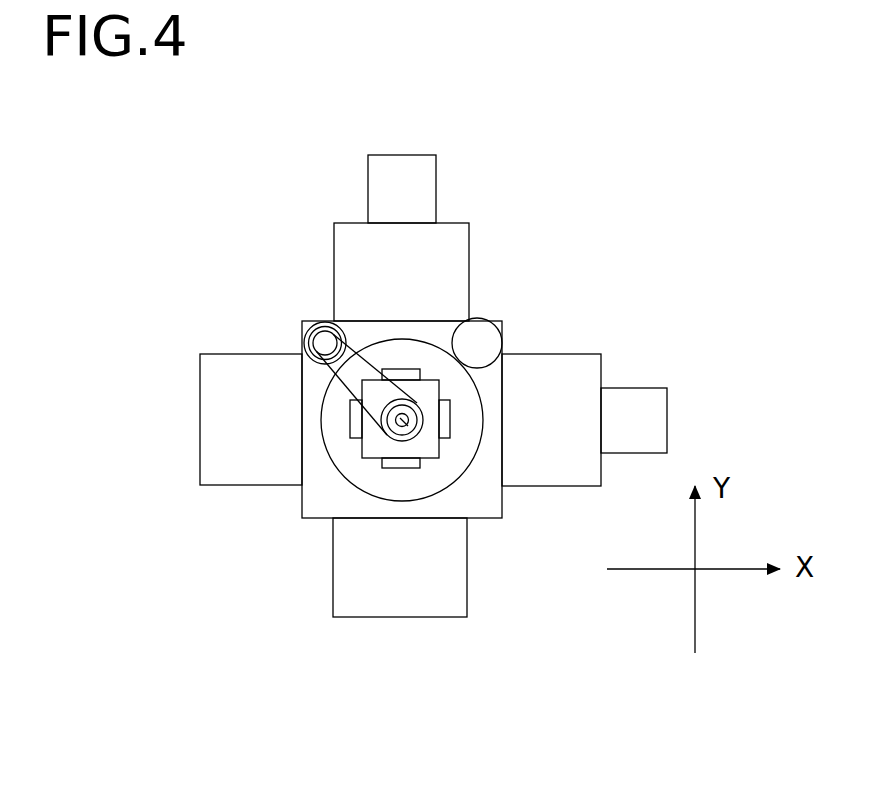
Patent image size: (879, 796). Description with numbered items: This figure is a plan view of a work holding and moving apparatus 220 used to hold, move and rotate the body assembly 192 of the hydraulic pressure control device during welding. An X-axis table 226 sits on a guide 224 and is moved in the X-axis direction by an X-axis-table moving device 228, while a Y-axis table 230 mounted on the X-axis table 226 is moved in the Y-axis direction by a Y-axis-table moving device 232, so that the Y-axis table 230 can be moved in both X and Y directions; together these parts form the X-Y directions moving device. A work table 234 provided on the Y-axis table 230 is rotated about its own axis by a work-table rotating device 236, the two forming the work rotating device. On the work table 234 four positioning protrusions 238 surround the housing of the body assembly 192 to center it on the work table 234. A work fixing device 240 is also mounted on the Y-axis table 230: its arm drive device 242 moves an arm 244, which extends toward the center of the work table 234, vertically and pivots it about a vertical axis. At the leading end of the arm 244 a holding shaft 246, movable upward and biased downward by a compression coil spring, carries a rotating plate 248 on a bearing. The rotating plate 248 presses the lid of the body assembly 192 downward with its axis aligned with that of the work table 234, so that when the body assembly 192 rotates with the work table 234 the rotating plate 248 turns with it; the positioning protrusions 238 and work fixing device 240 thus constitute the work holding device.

The body assembly 192 is at (368, 445).
The work holding and moving apparatus 220 is at (322, 221).
The guide 224 is at (560, 380).
The X-axis table 226 is at (432, 268).
The X-axis-table moving device 228 is at (635, 422).
The Y-axis table 230 is at (350, 505).
The Y-axis-table moving device 232 is at (412, 185).
The work table 234 is at (342, 435).
The work-table rotating device 236 is at (478, 345).
The positioning protrusions 238 is at (405, 463).
The work fixing device 240 is at (306, 318).
The arm drive device 242 is at (304, 335).
The arm 244 is at (310, 348).
The holding shaft 246 is at (415, 428).
The rotating plate 248 is at (418, 425).